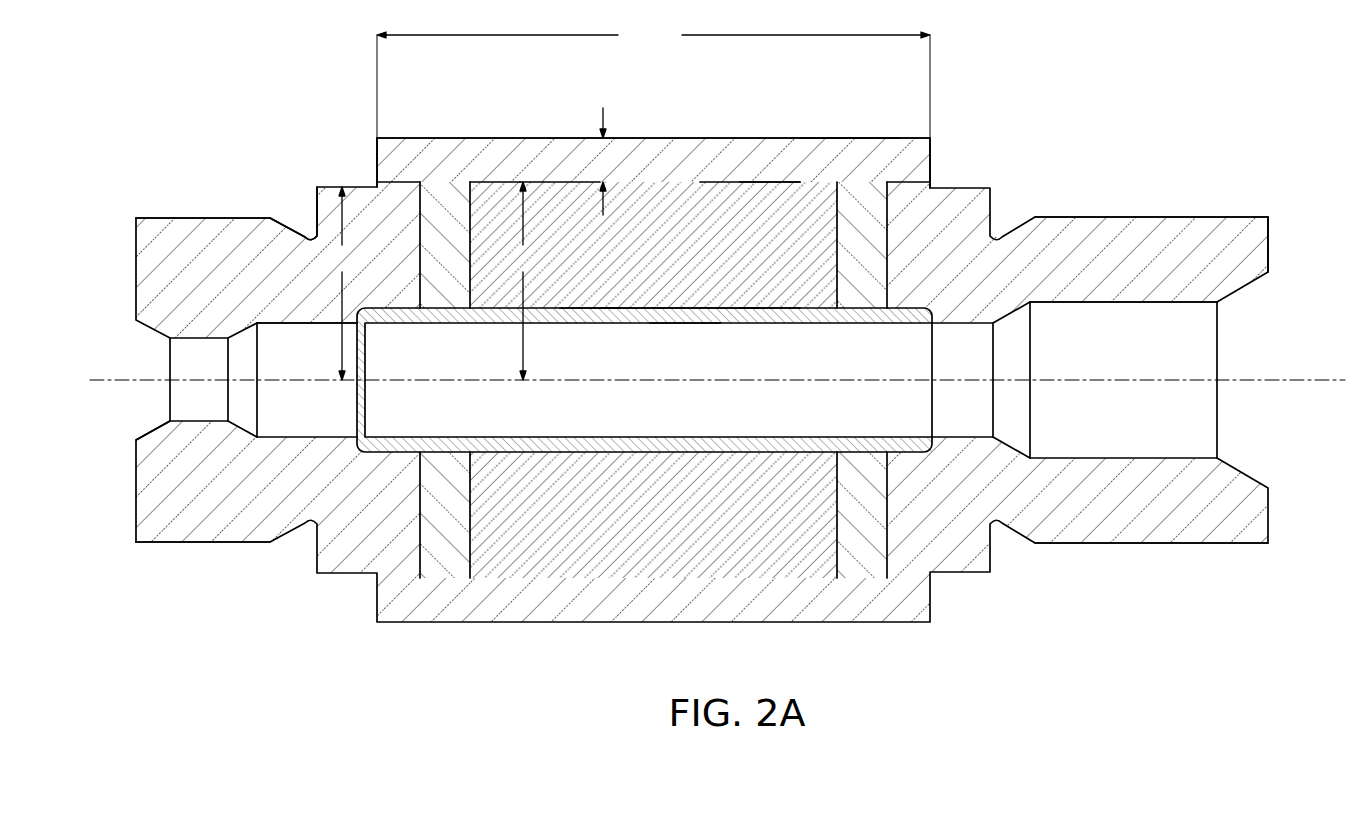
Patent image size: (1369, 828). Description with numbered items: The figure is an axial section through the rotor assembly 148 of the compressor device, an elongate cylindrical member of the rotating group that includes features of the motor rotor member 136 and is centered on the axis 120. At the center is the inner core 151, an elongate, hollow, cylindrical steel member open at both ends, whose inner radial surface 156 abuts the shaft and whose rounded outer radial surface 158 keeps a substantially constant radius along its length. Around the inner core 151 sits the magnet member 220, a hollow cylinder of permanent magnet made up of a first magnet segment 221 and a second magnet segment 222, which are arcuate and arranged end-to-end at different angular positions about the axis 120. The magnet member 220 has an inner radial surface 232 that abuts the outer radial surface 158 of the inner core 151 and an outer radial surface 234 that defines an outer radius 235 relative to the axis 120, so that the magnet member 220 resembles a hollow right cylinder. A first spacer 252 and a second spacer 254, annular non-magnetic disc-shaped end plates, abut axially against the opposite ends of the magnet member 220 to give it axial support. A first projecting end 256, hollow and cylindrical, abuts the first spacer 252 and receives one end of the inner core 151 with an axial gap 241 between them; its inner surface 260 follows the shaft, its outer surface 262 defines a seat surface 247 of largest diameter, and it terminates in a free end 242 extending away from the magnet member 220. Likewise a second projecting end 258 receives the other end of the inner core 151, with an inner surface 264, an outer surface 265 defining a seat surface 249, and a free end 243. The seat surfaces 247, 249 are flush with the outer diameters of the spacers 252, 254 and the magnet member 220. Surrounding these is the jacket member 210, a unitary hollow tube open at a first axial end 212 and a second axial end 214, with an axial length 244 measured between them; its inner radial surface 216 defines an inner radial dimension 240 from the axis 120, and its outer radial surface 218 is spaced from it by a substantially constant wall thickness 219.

The axis 120 is at (1307, 380).
The motor rotor member 136 is at (487, 134).
The rotor assembly 148 is at (288, 154).
The inner core 151 is at (768, 310).
The inner radial surface 156 is at (678, 323).
The outer radial surface 158 is at (710, 308).
The jacket member 210 is at (653, 110).
The first axial end 212 is at (377, 165).
The second axial end 214 is at (931, 150).
The inner radial surface 216 is at (777, 184).
The outer radial surface 218 is at (843, 137).
The wall thickness 219 is at (603, 161).
The magnet member 220 is at (750, 148).
The first magnet segment 221 is at (632, 256).
The second magnet segment 222 is at (632, 526).
The inner radial surface 232 is at (587, 310).
The outer radial surface 234 is at (553, 182).
The outer radius 235 is at (523, 281).
The inner radial dimension 240 is at (342, 283).
The axial gap 241 is at (359, 352).
The free end 242 is at (205, 543).
The free end 243 is at (1160, 543).
The axial length 244 is at (653, 80).
The seat surface 247 is at (400, 182).
The seat surface 249 is at (912, 182).
The first spacer 252 is at (444, 423).
The second spacer 254 is at (866, 423).
The first projecting end 256 is at (110, 460).
The second projecting end 258 is at (1248, 208).
The inner surface 260 is at (287, 323).
The outer surface 262 is at (203, 217).
The inner surface 264 is at (1123, 303).
The outer surface 265 is at (1152, 217).